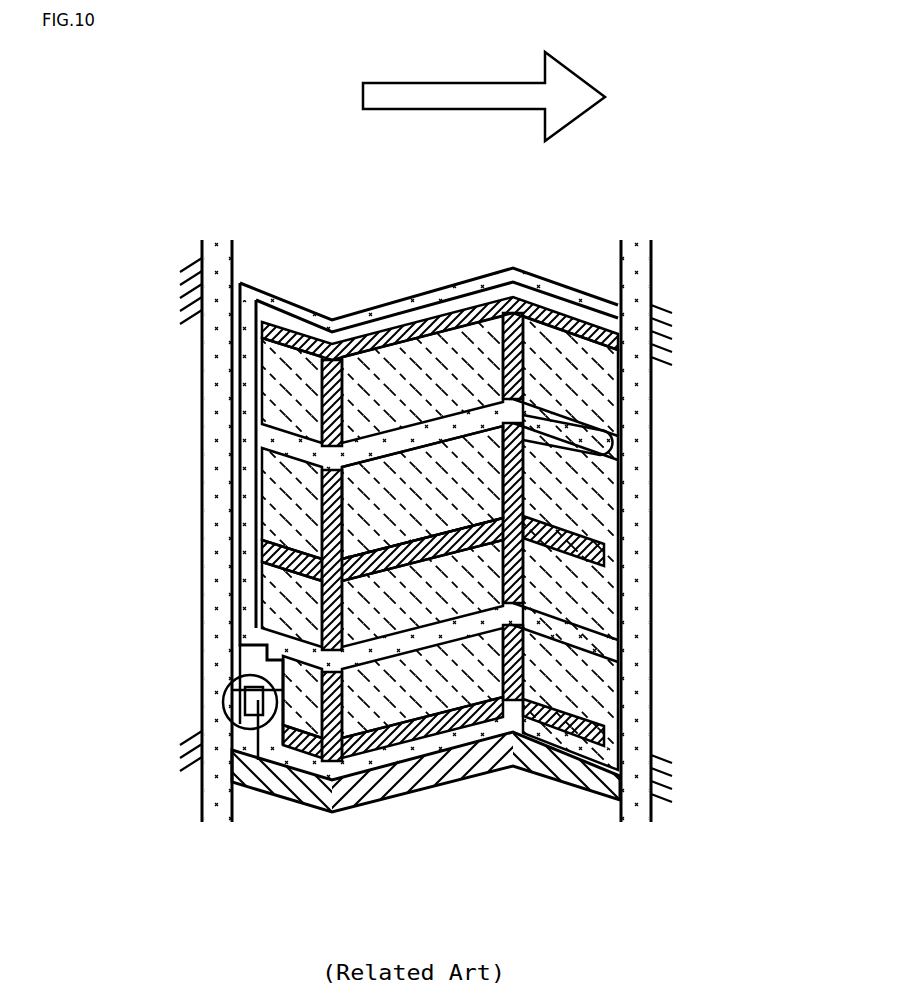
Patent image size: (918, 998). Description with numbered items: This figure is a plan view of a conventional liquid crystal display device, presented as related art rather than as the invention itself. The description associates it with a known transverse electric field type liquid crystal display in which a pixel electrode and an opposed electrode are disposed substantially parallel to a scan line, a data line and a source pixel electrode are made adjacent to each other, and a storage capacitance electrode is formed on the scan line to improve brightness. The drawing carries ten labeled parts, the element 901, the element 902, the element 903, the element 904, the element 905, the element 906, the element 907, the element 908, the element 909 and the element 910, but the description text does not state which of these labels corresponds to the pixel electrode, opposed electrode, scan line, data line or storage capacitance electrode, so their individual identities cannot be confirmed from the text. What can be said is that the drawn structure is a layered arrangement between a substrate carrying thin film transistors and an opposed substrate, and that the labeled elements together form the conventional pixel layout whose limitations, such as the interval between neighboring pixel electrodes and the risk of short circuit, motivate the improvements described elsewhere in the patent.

The first electrode 901 is at (555, 543).
The second electrode 902 is at (530, 624).
The substrate 903 is at (213, 258).
The bottom layer 904 is at (556, 772).
The encapsulation layer 905 is at (297, 316).
The sealing region 906 is at (585, 402).
The cell region 907 is at (470, 478).
The connection electrode 908 is at (525, 372).
The direction arrow 909 is at (363, 96).
The contact portion 910 is at (226, 691).